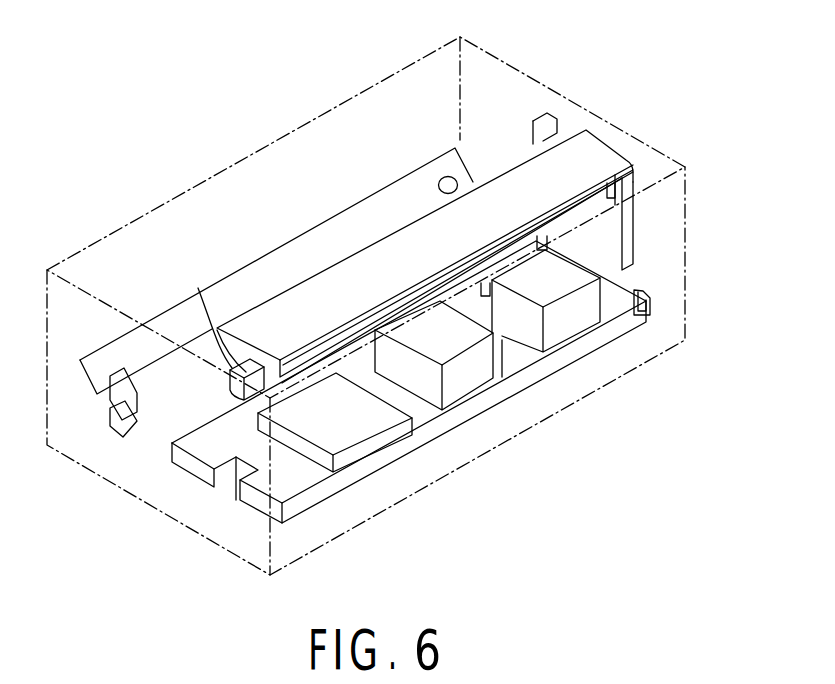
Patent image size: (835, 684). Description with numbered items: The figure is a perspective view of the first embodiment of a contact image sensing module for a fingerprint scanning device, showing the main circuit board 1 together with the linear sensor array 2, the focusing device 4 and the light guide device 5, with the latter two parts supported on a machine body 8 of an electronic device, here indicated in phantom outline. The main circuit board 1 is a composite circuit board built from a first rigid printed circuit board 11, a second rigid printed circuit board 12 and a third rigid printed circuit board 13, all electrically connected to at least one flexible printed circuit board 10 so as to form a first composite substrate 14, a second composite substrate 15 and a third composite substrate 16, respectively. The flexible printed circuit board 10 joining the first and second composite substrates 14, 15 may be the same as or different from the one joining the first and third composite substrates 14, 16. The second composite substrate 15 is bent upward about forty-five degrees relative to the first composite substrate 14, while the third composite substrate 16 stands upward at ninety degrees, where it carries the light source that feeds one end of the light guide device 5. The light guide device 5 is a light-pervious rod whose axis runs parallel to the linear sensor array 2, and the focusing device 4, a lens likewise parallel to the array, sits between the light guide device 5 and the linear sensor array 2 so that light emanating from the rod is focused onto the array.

The main circuit board 1 is at (490, 202).
The linear sensor array 2 is at (160, 367).
The focusing device 4 is at (219, 338).
The light guide device 5 is at (373, 252).
The machine body 8 is at (598, 394).
The flexible printed circuit board 10 is at (650, 300).
The first rigid printed circuit board 11 is at (250, 498).
The second rigid printed circuit board 12 is at (123, 435).
The third rigid printed circuit board 13 is at (630, 238).
The first composite substrate 14 is at (303, 502).
The second composite substrate 15 is at (133, 440).
The third composite substrate 16 is at (627, 215).